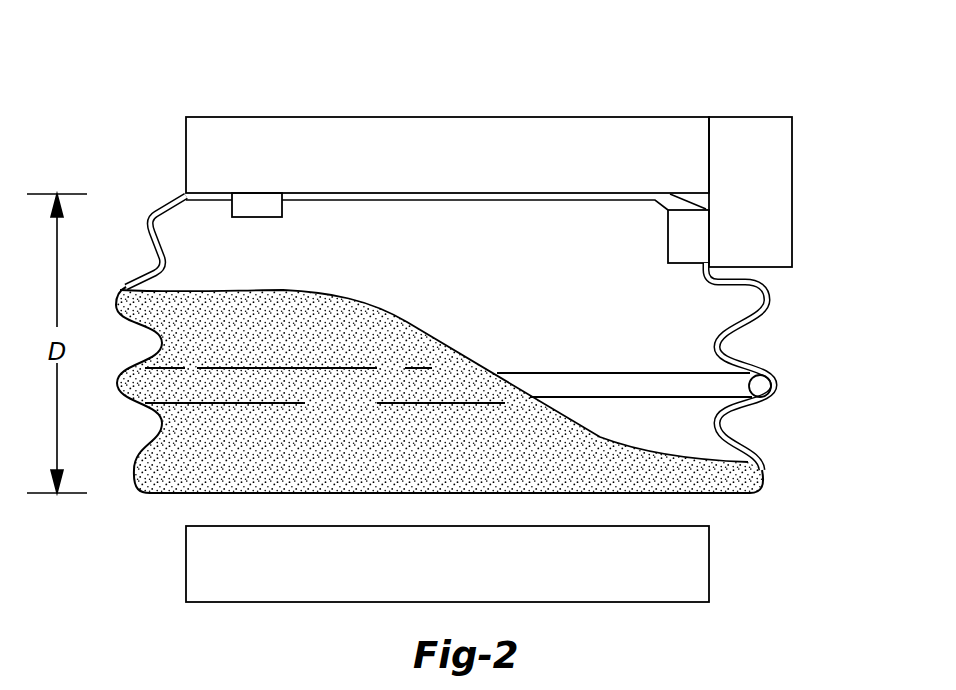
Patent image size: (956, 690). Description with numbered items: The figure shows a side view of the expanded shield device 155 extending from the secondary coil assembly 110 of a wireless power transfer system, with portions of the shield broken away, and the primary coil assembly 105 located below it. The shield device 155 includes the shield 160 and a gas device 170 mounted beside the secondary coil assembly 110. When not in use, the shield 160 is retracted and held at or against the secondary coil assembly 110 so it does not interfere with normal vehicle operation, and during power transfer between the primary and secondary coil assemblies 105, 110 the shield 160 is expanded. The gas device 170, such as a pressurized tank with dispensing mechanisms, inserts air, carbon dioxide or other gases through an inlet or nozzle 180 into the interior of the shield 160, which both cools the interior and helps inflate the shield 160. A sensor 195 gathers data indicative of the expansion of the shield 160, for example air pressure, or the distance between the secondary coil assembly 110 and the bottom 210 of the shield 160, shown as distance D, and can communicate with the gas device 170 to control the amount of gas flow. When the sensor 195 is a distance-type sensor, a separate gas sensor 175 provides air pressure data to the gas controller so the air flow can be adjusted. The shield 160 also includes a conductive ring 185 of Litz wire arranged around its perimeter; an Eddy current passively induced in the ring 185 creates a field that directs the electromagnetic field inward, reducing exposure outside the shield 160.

The primary coil assembly 105 is at (700, 568).
The secondary coil assembly 110 is at (460, 140).
The shield device 155 is at (760, 70).
The shield 160 is at (152, 218).
The gas device 170 is at (768, 160).
The gas sensor 175 is at (663, 217).
The inlet or nozzle 180 is at (693, 228).
The conductive ring 185 is at (760, 386).
The sensor 195 is at (257, 205).
The bottom surface 210 is at (200, 495).